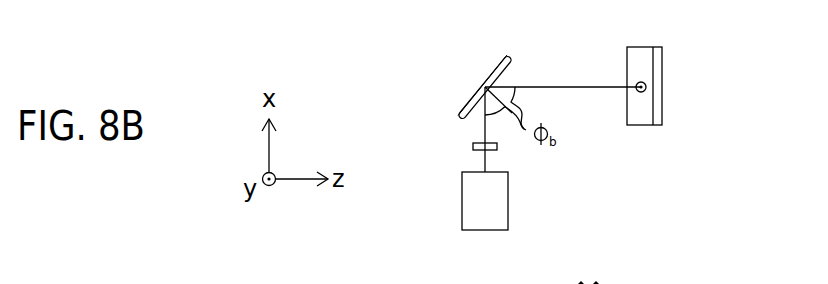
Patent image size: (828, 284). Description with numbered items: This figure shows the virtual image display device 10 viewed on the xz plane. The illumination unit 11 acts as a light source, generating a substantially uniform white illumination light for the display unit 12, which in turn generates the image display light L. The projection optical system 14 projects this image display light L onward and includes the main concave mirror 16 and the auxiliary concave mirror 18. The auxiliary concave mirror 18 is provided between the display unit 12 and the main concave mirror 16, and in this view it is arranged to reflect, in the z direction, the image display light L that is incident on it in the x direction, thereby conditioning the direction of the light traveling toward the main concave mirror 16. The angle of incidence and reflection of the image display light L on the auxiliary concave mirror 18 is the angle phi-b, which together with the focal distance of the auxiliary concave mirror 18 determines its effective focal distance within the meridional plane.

The virtual image display device 10 is at (419, 89).
The illumination unit 11 is at (462, 202).
The display unit 12 is at (472, 147).
The projection optical system 14 is at (456, 66).
The main concave mirror 16 is at (643, 125).
The auxiliary concave mirror 18 is at (501, 62).
The image display light L is at (565, 58).